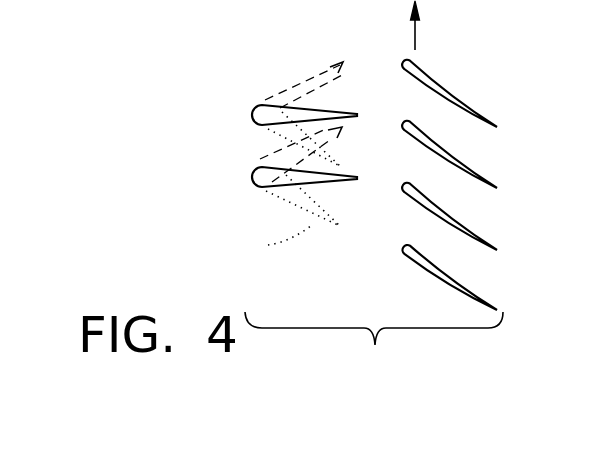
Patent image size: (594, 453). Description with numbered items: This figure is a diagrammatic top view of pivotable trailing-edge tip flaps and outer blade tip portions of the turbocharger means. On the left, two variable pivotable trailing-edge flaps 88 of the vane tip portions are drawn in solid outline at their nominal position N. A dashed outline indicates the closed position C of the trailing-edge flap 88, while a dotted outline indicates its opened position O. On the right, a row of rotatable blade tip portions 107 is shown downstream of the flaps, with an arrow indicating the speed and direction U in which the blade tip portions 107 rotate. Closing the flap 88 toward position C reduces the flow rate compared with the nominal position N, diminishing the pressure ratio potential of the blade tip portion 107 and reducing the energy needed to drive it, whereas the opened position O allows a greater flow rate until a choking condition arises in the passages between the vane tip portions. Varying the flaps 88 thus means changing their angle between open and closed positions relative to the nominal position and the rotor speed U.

The variable pivotable trailing-edge flap 88 is at (325, 108).
The blade tip portion 107 is at (457, 100).
The closed position C is at (338, 132).
The nominal position N is at (334, 182).
The opened position O is at (279, 240).
The rotor speed and direction U is at (418, 38).